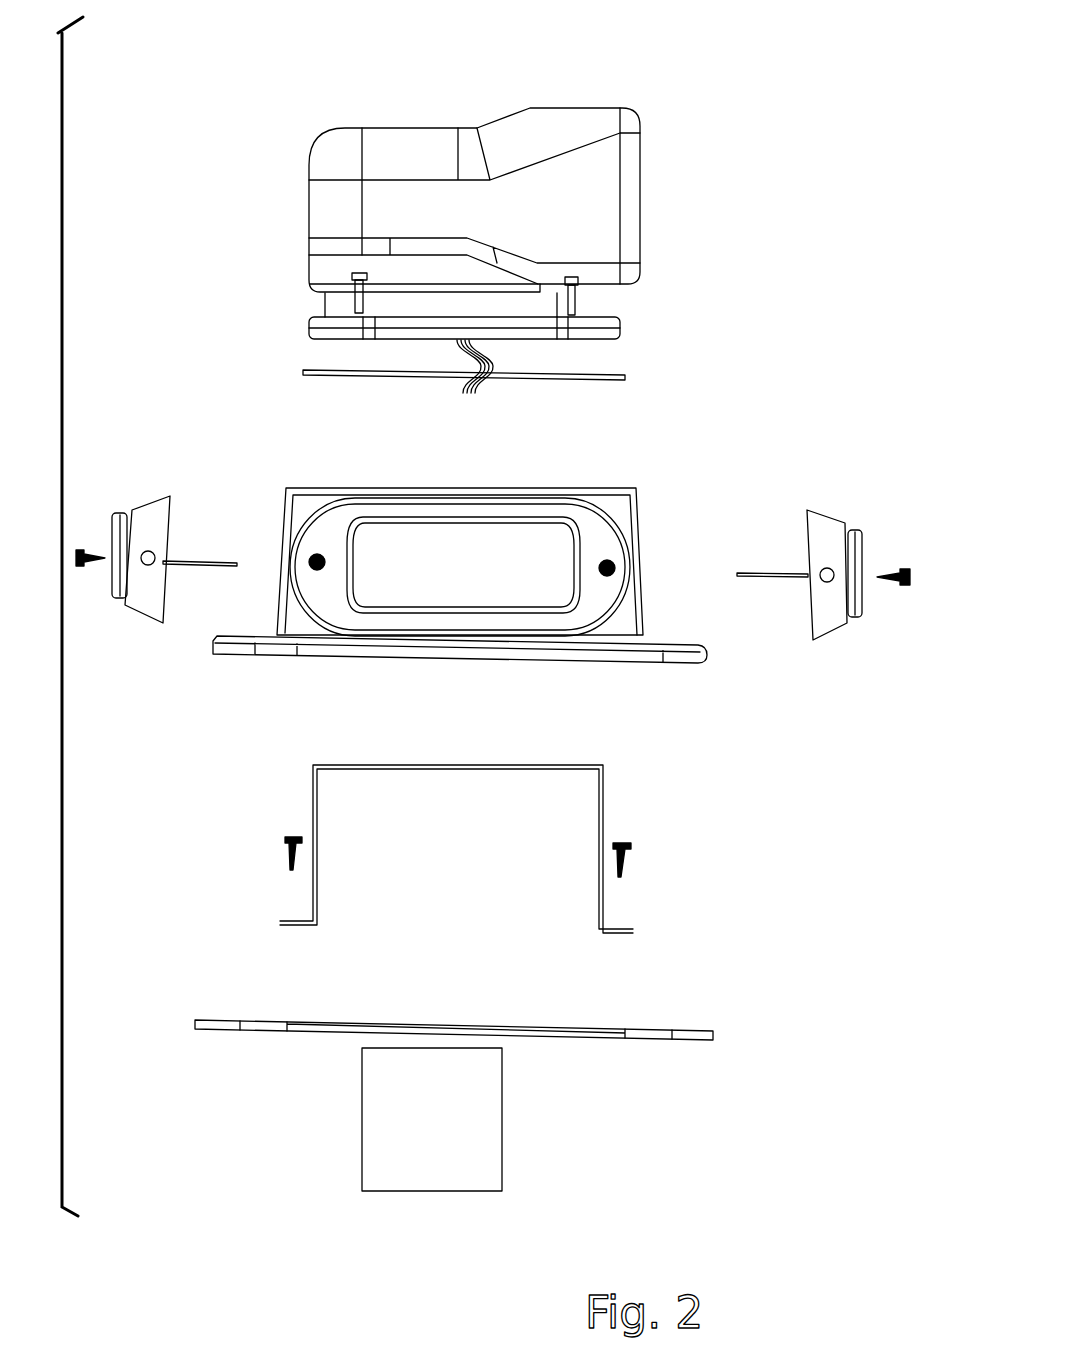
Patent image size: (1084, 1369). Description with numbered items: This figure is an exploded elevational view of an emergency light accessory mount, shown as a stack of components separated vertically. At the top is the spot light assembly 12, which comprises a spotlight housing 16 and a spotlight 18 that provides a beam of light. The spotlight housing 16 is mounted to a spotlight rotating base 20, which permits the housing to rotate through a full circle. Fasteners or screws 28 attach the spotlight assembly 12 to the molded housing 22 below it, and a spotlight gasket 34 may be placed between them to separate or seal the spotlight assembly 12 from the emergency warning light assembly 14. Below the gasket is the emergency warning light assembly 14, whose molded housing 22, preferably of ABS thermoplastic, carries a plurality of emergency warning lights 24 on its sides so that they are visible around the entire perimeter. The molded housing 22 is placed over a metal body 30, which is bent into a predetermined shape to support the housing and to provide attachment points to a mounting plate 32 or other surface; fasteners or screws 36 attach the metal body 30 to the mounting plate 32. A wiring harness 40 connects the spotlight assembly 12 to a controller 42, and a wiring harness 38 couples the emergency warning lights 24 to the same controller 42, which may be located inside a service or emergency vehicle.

The spot light assembly 12 is at (767, 211).
The emergency warning light assembly 14 is at (781, 469).
The spotlight housing 16 is at (403, 128).
The spotlight 18 is at (643, 157).
The spotlight rotating base 20 is at (320, 318).
The molded housing 22 is at (640, 657).
The emergency warning lights 24 is at (157, 497).
The fasteners or screws 28 is at (575, 305).
The metal body 30 is at (605, 790).
The mounting plate 32 is at (700, 1028).
The spotlight gasket 34 is at (610, 378).
The fasteners or screws 36 is at (285, 847).
The wiring harness 38 is at (202, 555).
The wiring harness 40 is at (463, 382).
The controller 42 is at (505, 1073).